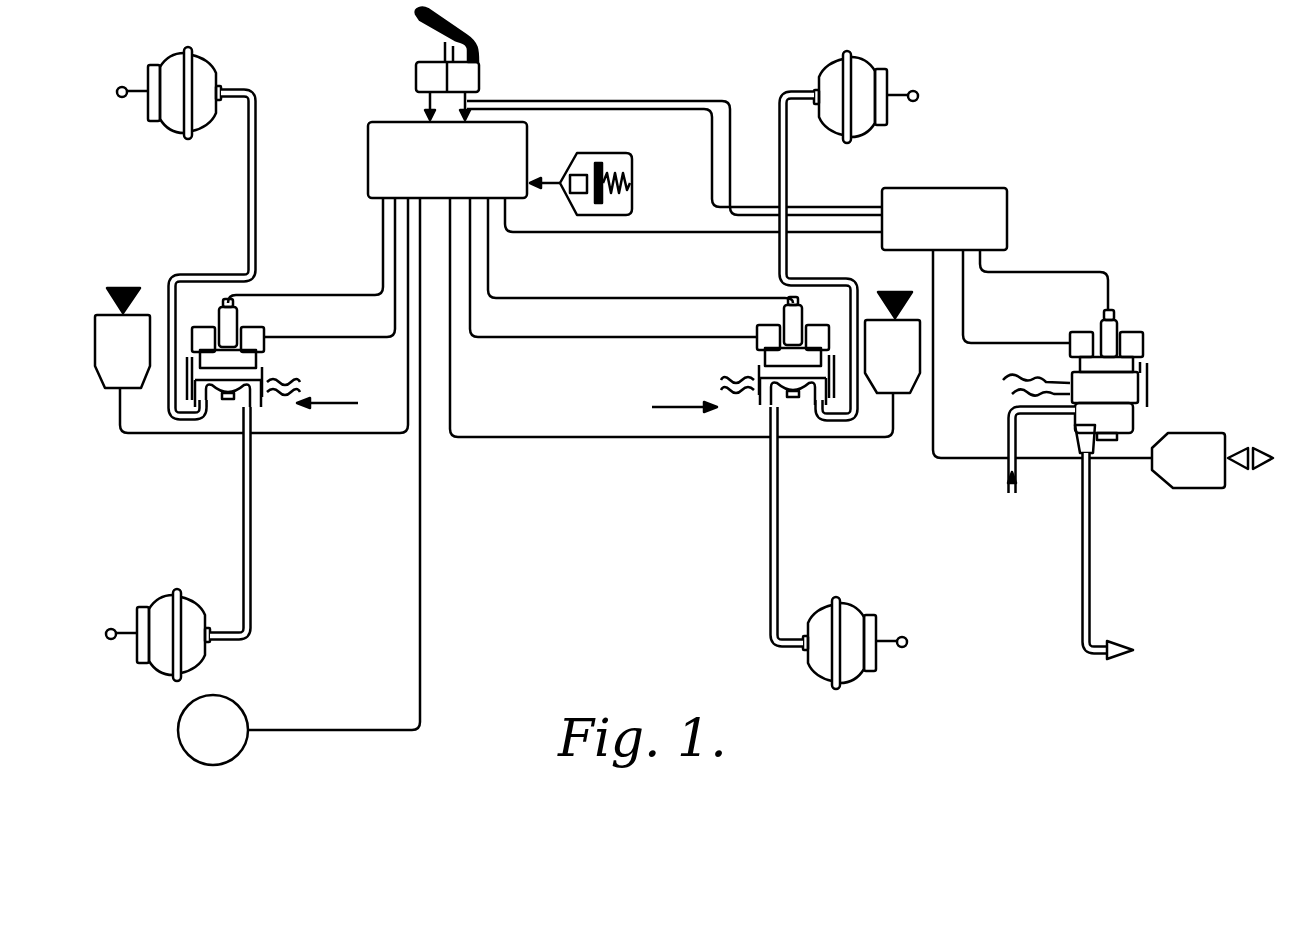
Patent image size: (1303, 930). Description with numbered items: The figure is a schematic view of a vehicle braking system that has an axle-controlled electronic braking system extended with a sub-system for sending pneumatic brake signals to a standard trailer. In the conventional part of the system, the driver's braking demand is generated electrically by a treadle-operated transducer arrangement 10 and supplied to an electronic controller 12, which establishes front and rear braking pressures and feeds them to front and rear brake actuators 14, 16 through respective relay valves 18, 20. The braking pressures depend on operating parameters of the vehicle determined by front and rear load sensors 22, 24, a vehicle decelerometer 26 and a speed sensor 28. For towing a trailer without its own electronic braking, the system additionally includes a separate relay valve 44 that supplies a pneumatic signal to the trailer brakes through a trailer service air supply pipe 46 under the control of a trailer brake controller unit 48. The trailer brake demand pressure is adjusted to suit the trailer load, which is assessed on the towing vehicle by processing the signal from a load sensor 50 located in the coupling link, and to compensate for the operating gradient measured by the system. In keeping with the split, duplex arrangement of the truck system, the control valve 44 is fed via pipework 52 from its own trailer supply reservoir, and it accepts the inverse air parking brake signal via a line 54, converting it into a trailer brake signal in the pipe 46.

The treadle-operated transducer arrangement 10 is at (489, 75).
The electronic controller 12 is at (515, 153).
The front brake actuators 14 is at (211, 58).
The rear brake actuators 16 is at (874, 86).
The front relay valve 18 is at (270, 291).
The rear relay valve 20 is at (820, 331).
The front load sensor 22 is at (103, 377).
The rear load sensor 24 is at (908, 378).
The vehicle decelerometer 26 is at (633, 183).
The speed sensor 28 is at (237, 719).
The relay valve 44 is at (1156, 358).
The trailer service air supply pipe 46 is at (1090, 510).
The trailer brake controller unit 48 is at (1010, 220).
The load sensor 50 is at (1198, 438).
The pipework 52 is at (1028, 374).
The line 54 is at (998, 472).